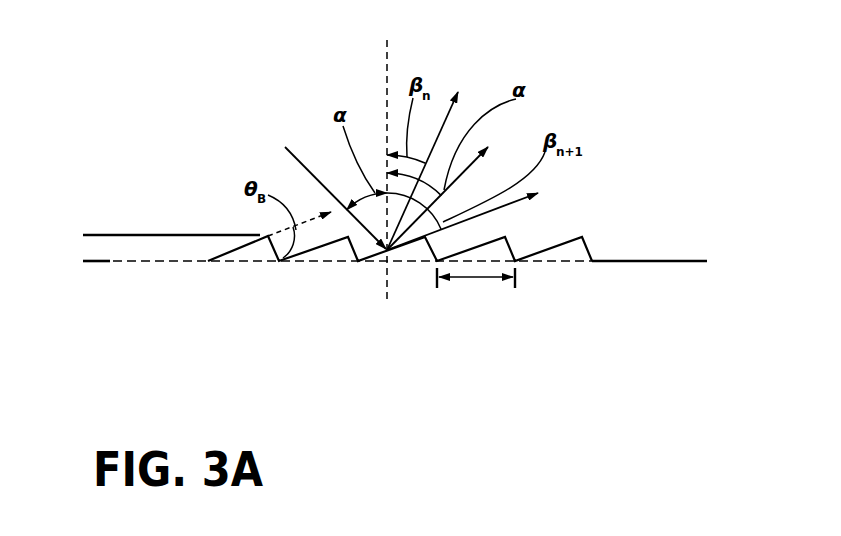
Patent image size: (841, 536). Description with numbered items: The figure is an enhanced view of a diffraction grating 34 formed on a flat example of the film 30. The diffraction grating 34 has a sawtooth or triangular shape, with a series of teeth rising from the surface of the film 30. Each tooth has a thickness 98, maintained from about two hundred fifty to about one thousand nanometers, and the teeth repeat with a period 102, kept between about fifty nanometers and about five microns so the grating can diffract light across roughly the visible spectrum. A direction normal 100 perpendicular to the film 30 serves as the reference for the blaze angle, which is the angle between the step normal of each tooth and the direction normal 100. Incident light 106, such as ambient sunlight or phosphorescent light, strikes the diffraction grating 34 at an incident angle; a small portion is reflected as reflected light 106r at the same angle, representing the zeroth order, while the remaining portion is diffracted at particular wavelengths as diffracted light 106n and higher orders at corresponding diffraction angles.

The film 30 is at (656, 259).
The diffraction grating 34 is at (595, 318).
The thickness 98 is at (98, 300).
The direction normal 100 is at (386, 68).
The period 102 is at (461, 279).
The incident light 106 is at (329, 185).
The diffracted light 106n is at (437, 161).
The reflected light 106r is at (463, 189).